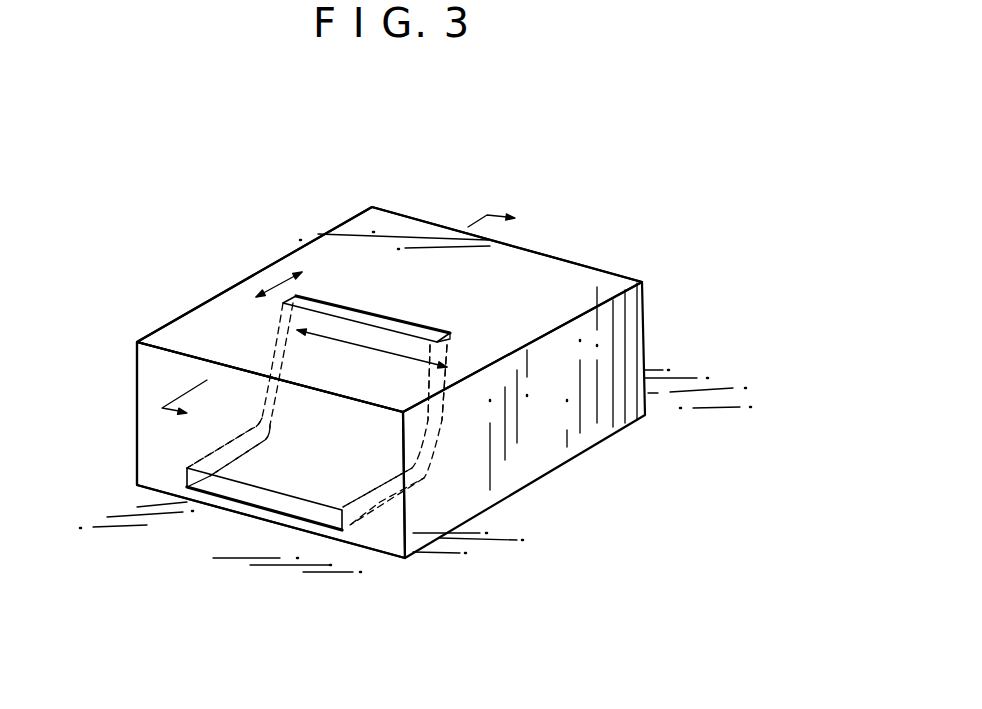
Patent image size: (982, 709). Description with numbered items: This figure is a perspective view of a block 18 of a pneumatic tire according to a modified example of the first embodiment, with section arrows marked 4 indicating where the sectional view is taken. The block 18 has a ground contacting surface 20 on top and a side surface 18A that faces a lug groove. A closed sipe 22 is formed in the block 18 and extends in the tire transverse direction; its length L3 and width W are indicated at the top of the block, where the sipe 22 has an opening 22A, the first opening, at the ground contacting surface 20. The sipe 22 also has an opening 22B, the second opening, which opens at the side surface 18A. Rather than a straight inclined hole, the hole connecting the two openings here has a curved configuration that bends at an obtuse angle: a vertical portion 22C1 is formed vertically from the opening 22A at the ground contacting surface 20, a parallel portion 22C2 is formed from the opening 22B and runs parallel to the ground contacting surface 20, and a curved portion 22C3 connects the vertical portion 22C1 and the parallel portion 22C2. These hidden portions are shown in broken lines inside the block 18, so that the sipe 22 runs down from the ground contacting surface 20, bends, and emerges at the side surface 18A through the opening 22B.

The block 18 is at (247, 182).
The side surface 18A is at (142, 408).
The ground contacting surface 20 is at (578, 278).
The sipe 22 is at (265, 347).
The opening 22A is at (380, 320).
The opening 22B is at (230, 493).
The vertical portion 22C1 is at (452, 343).
The parallel portion 22C2 is at (378, 500).
The curved portion 22C3 is at (433, 447).
The width W is at (277, 288).
The length L3 is at (353, 345).
The section line for FIG. 4 is at (351, 326).